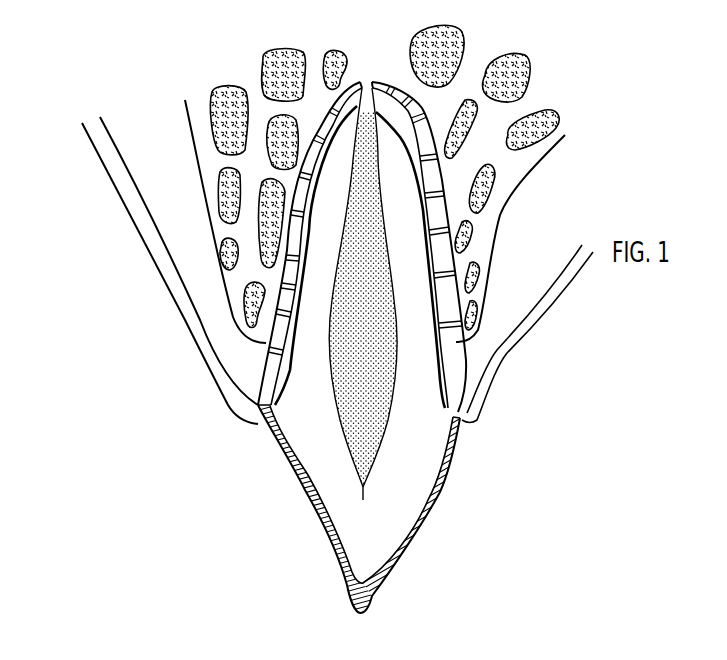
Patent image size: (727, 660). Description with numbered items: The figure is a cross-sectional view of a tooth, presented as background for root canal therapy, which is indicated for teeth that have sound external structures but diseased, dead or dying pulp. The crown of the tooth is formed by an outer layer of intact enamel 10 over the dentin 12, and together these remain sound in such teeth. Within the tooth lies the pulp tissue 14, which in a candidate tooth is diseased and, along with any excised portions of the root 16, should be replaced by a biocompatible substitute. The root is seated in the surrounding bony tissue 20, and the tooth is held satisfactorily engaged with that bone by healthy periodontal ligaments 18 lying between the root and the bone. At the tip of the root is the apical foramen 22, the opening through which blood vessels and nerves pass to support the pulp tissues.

The enamel 10 is at (345, 577).
The dentin 12 is at (343, 477).
The pulp tissue 14 is at (352, 382).
The root 16 is at (373, 363).
The periodontal ligaments 18 is at (277, 278).
The bony tissue 20 is at (247, 159).
The apical foramen 22 is at (366, 78).